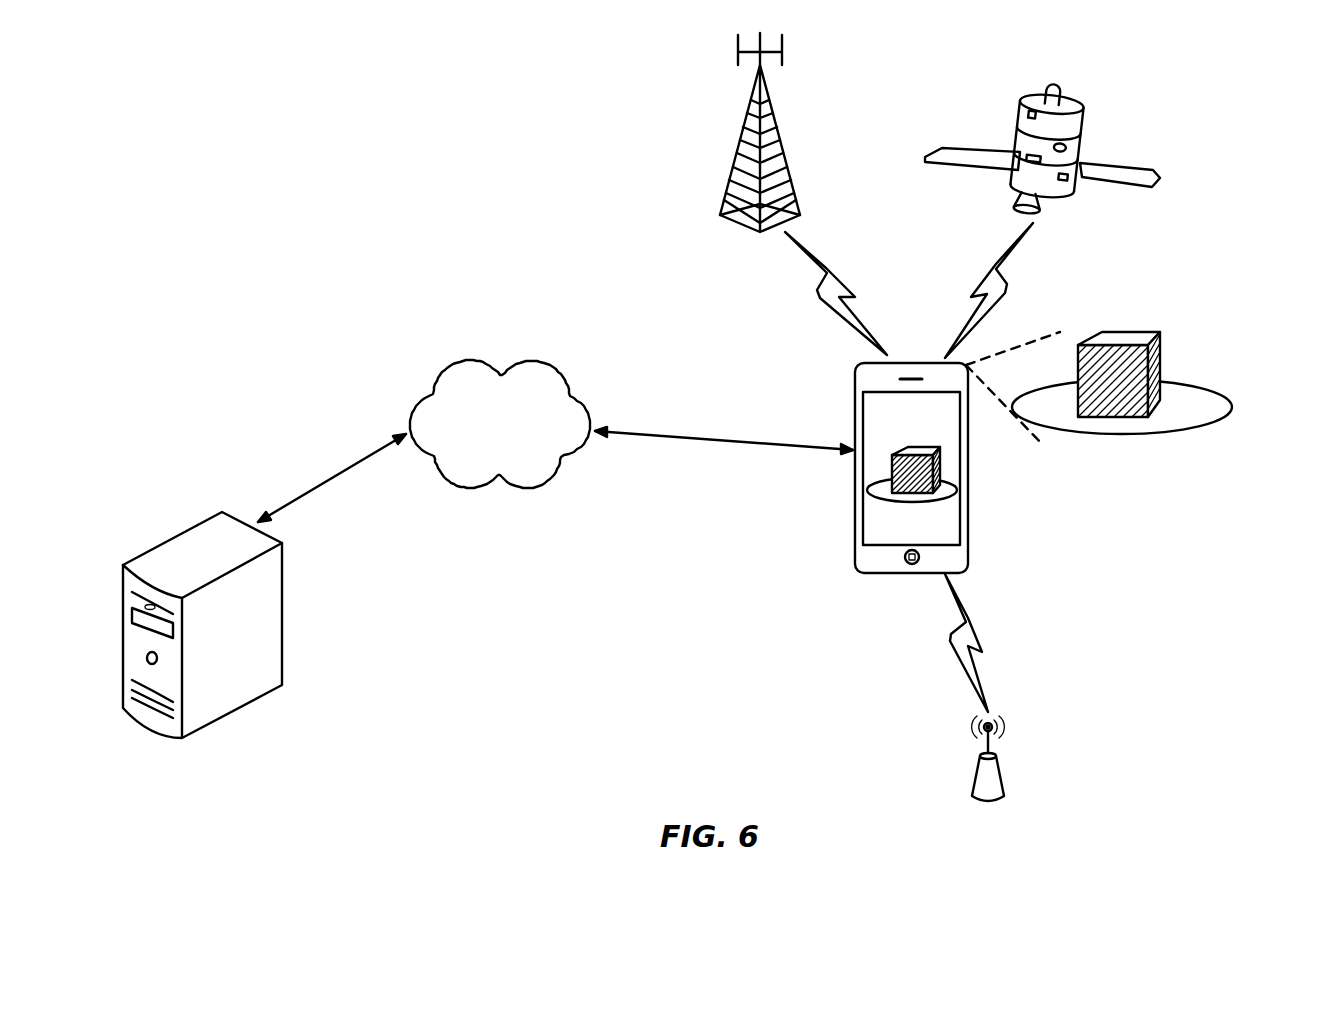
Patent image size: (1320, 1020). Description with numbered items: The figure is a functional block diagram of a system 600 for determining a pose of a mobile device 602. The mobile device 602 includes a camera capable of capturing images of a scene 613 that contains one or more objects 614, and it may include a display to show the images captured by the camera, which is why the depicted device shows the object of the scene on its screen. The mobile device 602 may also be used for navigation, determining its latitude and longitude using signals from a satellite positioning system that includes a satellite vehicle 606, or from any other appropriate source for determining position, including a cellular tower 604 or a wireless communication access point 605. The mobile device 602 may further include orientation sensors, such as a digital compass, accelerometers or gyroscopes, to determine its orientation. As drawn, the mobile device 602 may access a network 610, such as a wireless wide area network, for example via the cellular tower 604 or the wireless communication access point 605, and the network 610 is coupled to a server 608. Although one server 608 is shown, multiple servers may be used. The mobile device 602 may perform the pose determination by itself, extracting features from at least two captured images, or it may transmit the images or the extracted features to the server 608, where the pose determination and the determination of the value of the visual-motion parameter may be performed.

The system 600 is at (258, 161).
The mobile device 602 is at (878, 578).
The cellular tower 604 is at (744, 131).
The wireless communication access point 605 is at (1000, 764).
The satellite vehicle 606 is at (1074, 106).
The server 608 is at (180, 530).
The network 610 is at (526, 360).
The scene 613 is at (1200, 347).
The object 614 is at (1130, 403).